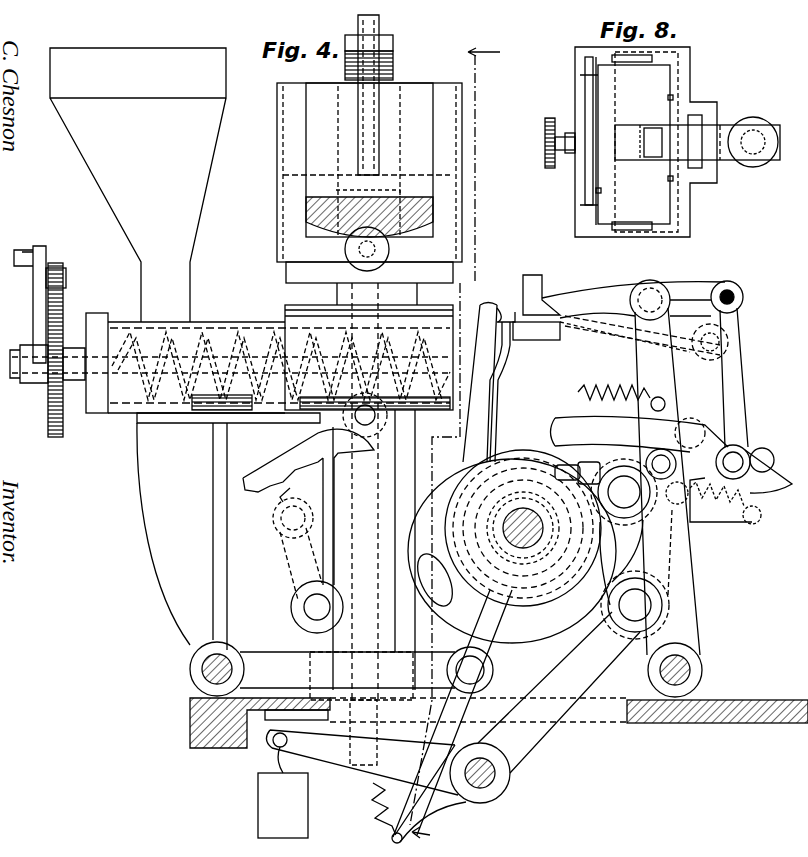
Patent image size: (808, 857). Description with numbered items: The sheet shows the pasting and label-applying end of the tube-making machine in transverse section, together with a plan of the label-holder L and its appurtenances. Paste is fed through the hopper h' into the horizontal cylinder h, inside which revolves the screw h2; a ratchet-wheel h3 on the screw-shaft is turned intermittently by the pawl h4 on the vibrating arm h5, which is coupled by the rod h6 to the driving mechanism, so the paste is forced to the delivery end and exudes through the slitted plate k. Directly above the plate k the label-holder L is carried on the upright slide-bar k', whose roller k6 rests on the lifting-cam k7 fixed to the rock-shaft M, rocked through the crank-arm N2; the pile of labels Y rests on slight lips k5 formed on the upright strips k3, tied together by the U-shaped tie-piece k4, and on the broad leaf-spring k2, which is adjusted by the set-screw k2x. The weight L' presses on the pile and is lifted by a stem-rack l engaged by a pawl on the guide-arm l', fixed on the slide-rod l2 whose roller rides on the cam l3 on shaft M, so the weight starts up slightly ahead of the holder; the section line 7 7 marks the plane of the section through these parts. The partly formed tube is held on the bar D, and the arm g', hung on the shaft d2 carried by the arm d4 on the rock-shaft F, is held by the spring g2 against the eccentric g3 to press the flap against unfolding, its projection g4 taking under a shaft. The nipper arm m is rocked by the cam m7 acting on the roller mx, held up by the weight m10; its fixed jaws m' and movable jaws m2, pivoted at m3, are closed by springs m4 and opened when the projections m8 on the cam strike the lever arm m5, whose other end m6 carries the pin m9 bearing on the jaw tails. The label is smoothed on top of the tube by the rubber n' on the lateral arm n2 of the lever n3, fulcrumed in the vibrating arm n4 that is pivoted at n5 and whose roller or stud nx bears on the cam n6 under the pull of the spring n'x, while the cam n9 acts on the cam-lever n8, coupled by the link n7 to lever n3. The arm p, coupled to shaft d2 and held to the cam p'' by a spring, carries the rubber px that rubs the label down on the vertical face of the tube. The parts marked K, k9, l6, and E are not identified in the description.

In FIG. 4, the hopper h' is at (138, 185).
In FIG. 4, the cylinder h is at (281, 366).
In FIG. 4, the screw h2 is at (268, 363).
In FIG. 4, the ratchet-wheel h3 is at (66, 345).
In FIG. 4, the pawl h4 is at (52, 278).
In FIG. 4, the radial vibrating arm h5 is at (48, 300).
In FIG. 4, the rod h6 is at (28, 256).
In FIG. 4, the slotted plate k is at (369, 348).
In FIG. 4, the slide-bar k' is at (375, 524).
In FIG. 8, the slide-bar k' is at (700, 127).
In FIG. 4, the leaf-spring k2 is at (369, 272).
In FIG. 8, the leaf-spring k2 is at (594, 90).
In FIG. 4, the set-screw k2x is at (390, 249).
In FIG. 8, the set-screw k2x is at (546, 146).
In FIG. 8, the upright metal strips k3 is at (649, 62).
In FIG. 8, the tie-piece k4 is at (670, 178).
In FIG. 8, the supporting lips k5 is at (601, 190).
In FIG. 8, the stud or roller k6 is at (668, 92).
In FIG. 4, the lifting-cam k7 is at (308, 507).
In FIG. 4, the roller k9 is at (388, 420).
In FIG. 4, the label-holder L is at (360, 172).
In FIG. 8, the label-holder L is at (640, 133).
In FIG. 4, the weight L' is at (366, 160).
In FIG. 8, the weight L' is at (638, 142).
In FIG. 4, the labels Y is at (330, 200).
In FIG. 4, the stem-rack l is at (377, 93).
In FIG. 8, the stem-rack l is at (689, 142).
In FIG. 4, the guide-arm l' is at (381, 57).
In FIG. 8, the guide-arm l' is at (732, 171).
In FIG. 8, the slide-rod l2 is at (756, 130).
In FIG. 4, the cam l3 is at (258, 495).
In FIG. 8, the rod head l6 is at (653, 142).
In FIG. 4, the section line 7 is at (455, 445).
In FIG. 4, the frame K is at (228, 531).
In FIG. 4, the rock-shaft F is at (190, 665).
In FIG. 4, the base E is at (717, 700).
In FIG. 4, the arm d4 is at (347, 676).
In FIG. 4, the shaft d2 is at (485, 668).
In FIG. 4, the crank-arm N2 is at (280, 540).
In FIG. 4, the rock-shaft M is at (317, 607).
In FIG. 4, the arm p is at (480, 383).
In FIG. 4, the rubber px is at (492, 300).
In FIG. 4, the cam p'' is at (604, 562).
In FIG. 4, the rubber n' is at (507, 302).
In FIG. 4, the spring n'x is at (621, 388).
In FIG. 4, the lateral arm n2 is at (536, 290).
In FIG. 4, the lever n3 is at (615, 297).
In FIG. 4, the vibrating arm n4 is at (661, 539).
In FIG. 4, the pivot n5 is at (703, 668).
In FIG. 4, the cam n6 is at (523, 531).
In FIG. 4, the link n7 is at (745, 366).
In FIG. 4, the cam-lever n8 is at (591, 472).
In FIG. 4, the cam n9 is at (500, 514).
In FIG. 4, the roller or stud nx is at (652, 506).
In FIG. 4, the bar D is at (536, 331).
In FIG. 4, the arm g' is at (455, 579).
In FIG. 4, the spring g2 is at (372, 790).
In FIG. 4, the eccentric g3 is at (523, 528).
In FIG. 4, the projection g4 is at (462, 790).
In FIG. 4, the arm m is at (559, 692).
In FIG. 4, the fixed jaws m' is at (625, 340).
In FIG. 4, the movable jaws m2 is at (612, 328).
In FIG. 4, the pivot m3 is at (701, 386).
In FIG. 4, the springs m4 is at (752, 500).
In FIG. 4, the lever arm m5 is at (640, 434).
In FIG. 4, the lever end m6 is at (752, 458).
In FIG. 4, the cam m7 is at (512, 551).
In FIG. 4, the projections m8 is at (495, 528).
In FIG. 4, the pin m9 is at (776, 462).
In FIG. 4, the weight m10 is at (358, 784).
In FIG. 4, the roller mx is at (622, 626).